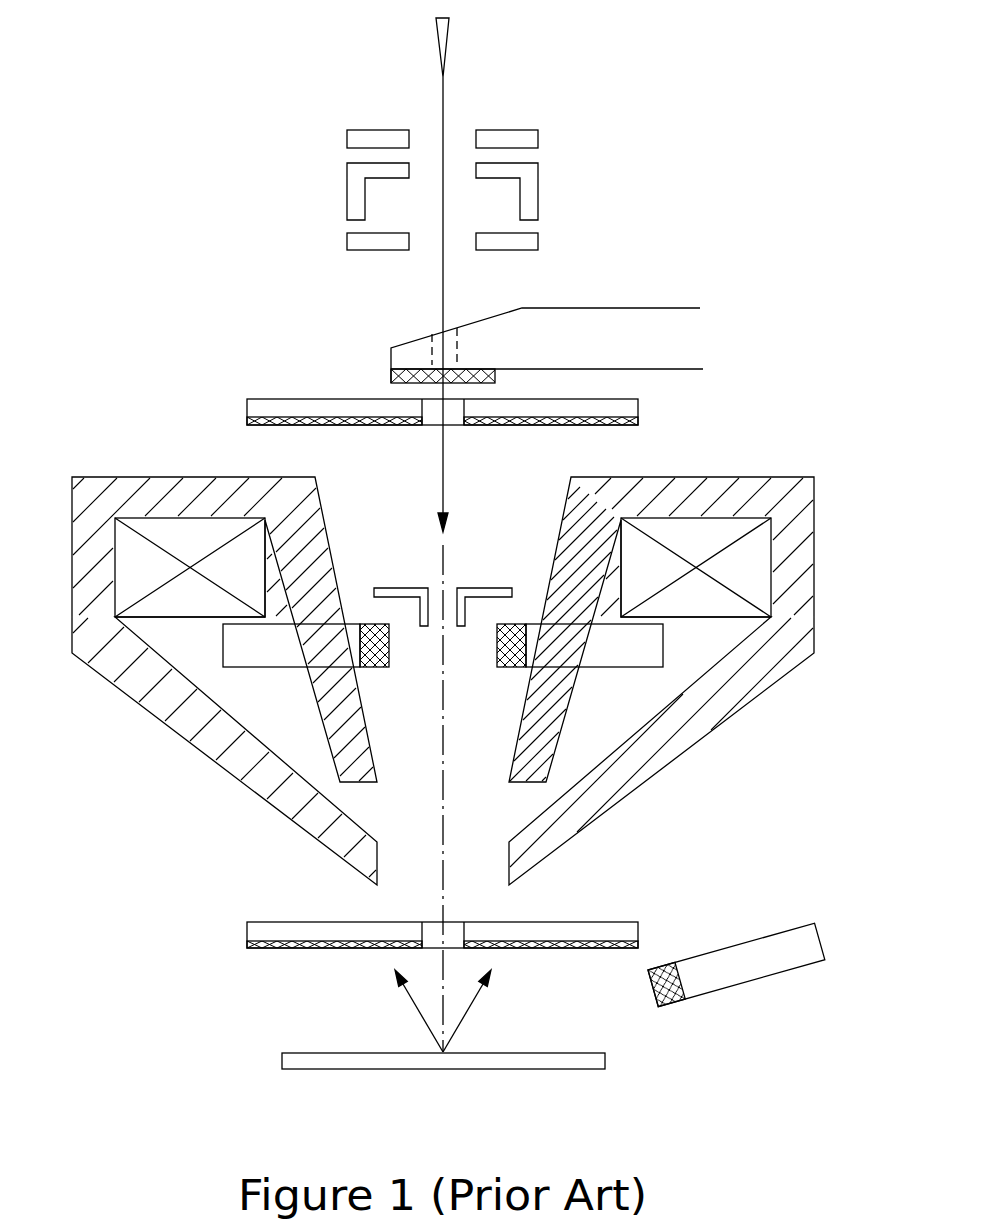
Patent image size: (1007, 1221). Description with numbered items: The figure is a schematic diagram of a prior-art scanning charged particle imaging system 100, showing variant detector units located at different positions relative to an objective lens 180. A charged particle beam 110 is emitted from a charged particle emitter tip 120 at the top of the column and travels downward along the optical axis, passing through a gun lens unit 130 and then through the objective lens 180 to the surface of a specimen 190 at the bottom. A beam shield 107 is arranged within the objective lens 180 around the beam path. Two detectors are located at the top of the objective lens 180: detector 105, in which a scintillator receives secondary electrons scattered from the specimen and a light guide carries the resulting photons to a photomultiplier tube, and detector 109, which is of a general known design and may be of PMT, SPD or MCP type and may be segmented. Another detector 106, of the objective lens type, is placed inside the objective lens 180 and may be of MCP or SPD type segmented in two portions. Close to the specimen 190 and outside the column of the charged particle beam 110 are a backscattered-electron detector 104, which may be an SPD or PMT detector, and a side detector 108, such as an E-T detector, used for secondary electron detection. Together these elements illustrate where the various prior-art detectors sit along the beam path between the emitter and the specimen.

The electron beam inspection system 100 is at (137, 24).
The charged particle beam 110 is at (443, 98).
The charged particle emitter (tip) 120 is at (447, 28).
The gun lens unit 130 is at (530, 185).
The detector 105 is at (678, 340).
The detector 109 is at (623, 408).
The beam shield 107 is at (483, 592).
The objective lens 180 is at (815, 543).
The detector 106 is at (267, 652).
The backscattered-electron detector 104 is at (588, 921).
The side detector 108 is at (727, 943).
The specimen 190 is at (605, 1058).